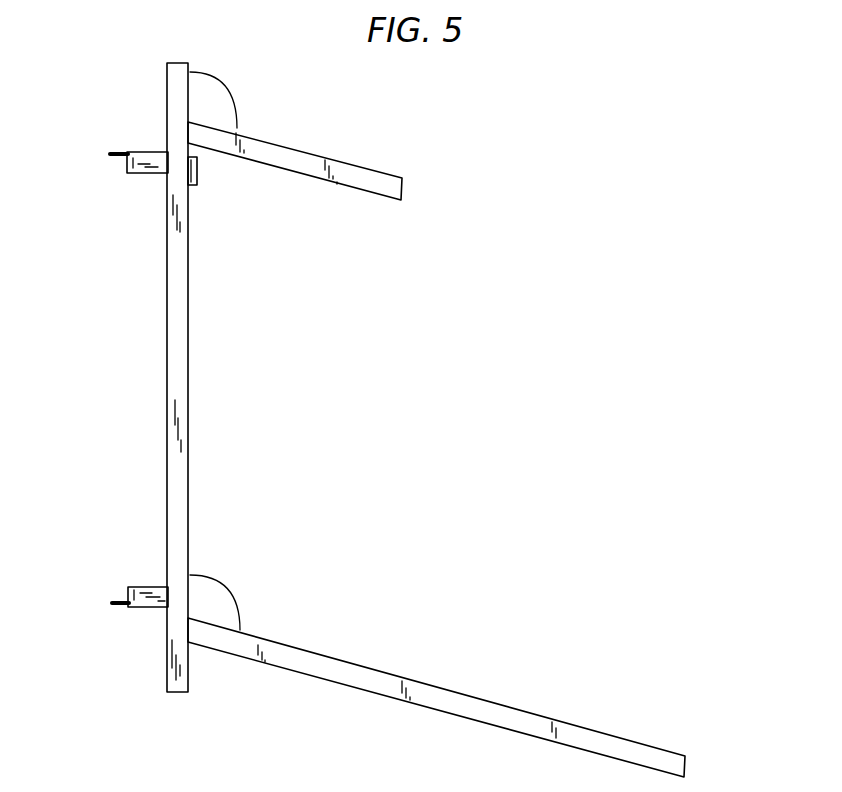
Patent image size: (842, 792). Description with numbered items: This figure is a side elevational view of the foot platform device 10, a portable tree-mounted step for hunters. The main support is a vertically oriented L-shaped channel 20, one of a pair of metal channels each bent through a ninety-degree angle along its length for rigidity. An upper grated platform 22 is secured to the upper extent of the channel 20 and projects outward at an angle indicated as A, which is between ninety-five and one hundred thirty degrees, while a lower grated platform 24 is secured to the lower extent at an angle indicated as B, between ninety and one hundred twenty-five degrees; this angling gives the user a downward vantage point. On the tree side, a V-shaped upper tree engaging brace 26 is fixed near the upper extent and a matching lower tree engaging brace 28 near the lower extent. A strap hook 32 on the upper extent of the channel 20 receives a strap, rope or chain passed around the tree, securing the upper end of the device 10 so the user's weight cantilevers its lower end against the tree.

The foot platform device 10 is at (556, 252).
The L-shaped channel 20 is at (180, 476).
The upper grated platform 22 is at (308, 162).
The lower grated platform 24 is at (425, 697).
The upper tree engaging brace 26 is at (152, 166).
The lower tree engaging brace 28 is at (128, 604).
The strap hook 32 is at (197, 172).